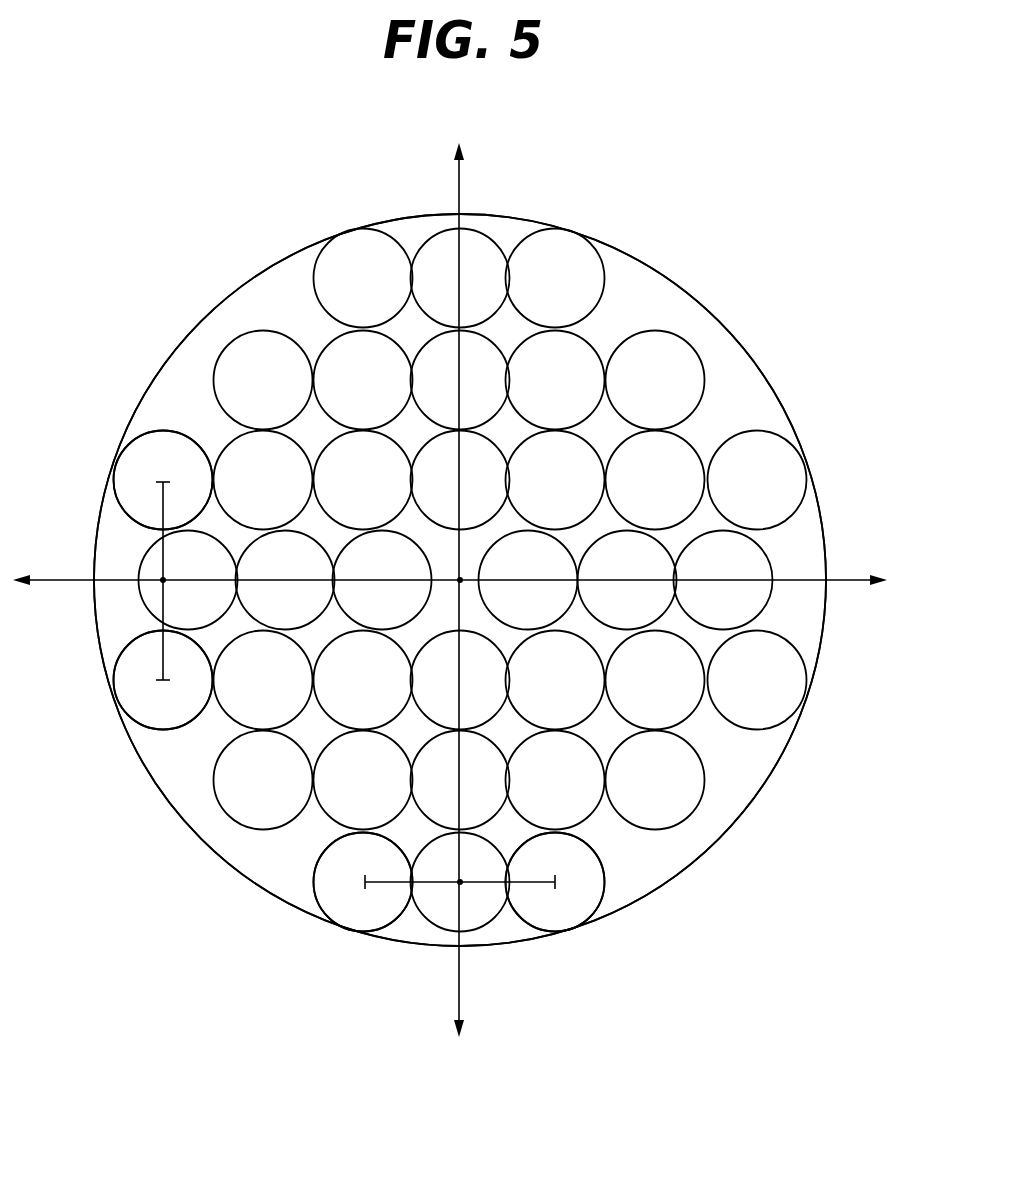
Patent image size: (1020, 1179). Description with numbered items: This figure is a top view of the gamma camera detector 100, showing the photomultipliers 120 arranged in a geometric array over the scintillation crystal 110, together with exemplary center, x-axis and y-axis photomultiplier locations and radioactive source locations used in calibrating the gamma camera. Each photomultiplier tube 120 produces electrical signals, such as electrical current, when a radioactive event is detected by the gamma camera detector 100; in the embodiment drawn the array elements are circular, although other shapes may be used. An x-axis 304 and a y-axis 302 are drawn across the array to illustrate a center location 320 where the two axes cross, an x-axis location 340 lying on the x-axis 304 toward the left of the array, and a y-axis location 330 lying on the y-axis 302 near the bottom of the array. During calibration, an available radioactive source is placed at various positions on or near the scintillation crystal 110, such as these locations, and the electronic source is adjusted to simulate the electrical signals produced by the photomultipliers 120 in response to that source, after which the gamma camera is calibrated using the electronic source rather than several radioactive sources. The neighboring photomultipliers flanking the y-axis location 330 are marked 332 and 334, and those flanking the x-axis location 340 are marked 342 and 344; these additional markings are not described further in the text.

The gamma camera detector 100 is at (636, 184).
The scintillation crystal 110 is at (260, 848).
The photomultiplier tube 120 is at (360, 278).
The y-axis 302 is at (460, 196).
The x-axis 304 is at (838, 578).
The center location 320 is at (460, 580).
The y-axis location 330 is at (462, 895).
The bottom left lens element 332 is at (395, 923).
The bottom right lens element 334 is at (605, 887).
The x-axis location 340 is at (155, 581).
The left upper lens element 342 is at (123, 523).
The left lower lens element 344 is at (163, 733).